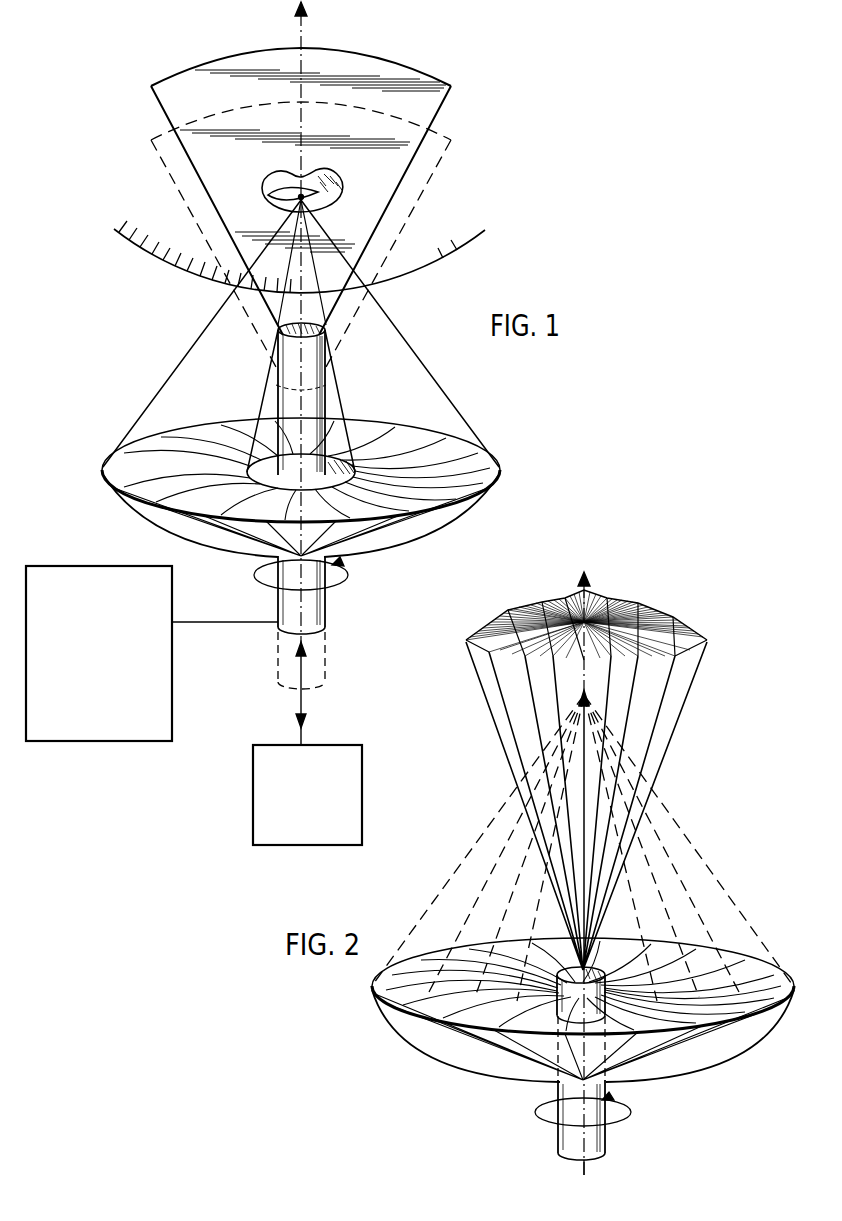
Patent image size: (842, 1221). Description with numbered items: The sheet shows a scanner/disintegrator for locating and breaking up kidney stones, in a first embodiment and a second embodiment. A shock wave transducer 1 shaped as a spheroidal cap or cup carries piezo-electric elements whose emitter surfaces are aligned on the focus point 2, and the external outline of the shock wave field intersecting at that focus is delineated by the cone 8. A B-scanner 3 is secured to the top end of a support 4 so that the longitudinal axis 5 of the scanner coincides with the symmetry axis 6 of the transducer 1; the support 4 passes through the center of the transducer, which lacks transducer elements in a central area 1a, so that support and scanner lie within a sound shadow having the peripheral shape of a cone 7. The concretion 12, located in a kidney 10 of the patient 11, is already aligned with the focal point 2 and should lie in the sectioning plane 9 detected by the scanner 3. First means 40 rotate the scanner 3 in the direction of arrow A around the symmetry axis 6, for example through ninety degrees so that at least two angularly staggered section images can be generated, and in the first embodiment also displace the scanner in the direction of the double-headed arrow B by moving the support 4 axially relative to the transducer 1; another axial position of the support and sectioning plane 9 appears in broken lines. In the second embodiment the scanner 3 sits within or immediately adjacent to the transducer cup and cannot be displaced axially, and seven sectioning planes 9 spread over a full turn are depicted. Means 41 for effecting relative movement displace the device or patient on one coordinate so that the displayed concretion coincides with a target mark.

In FIG. 1, the shock wave transducer 1 is at (444, 496).
In FIG. 2, the shock wave transducer 1 is at (724, 1040).
In FIG. 1, the central area 1a is at (331, 478).
In FIG. 1, the focus point 2 is at (292, 197).
In FIG. 2, the focus point 2 is at (590, 690).
In FIG. 1, the B-scanner 3 is at (290, 374).
In FIG. 2, the B-scanner 3 is at (568, 990).
In FIG. 1, the support 4 is at (290, 612).
In FIG. 2, the support 4 is at (566, 1143).
In FIG. 1, the longitudinal axis 5 is at (304, 28).
In FIG. 2, the longitudinal axis 5 is at (586, 1164).
In FIG. 1, the symmetry axis 6 is at (296, 409).
In FIG. 2, the symmetry axis 6 is at (588, 600).
In FIG. 1, the cone 7 is at (338, 364).
In FIG. 1, the cone 8 is at (180, 360).
In FIG. 2, the cone 8 is at (668, 806).
In FIG. 1, the sectioning plane 9 is at (394, 74).
In FIG. 2, the sectioning plane 9 is at (654, 620).
In FIG. 1, the kidney 10 is at (336, 182).
In FIG. 1, the patient 11 is at (416, 266).
In FIG. 1, the concretion 12 is at (314, 204).
In FIG. 1, the first means 40 is at (307, 795).
In FIG. 1, the means for effecting relative movement 41 is at (152, 653).
In FIG. 1, the arrow A is at (258, 575).
In FIG. 2, the arrow A is at (630, 1110).
In FIG. 1, the double-headed arrow B is at (300, 700).